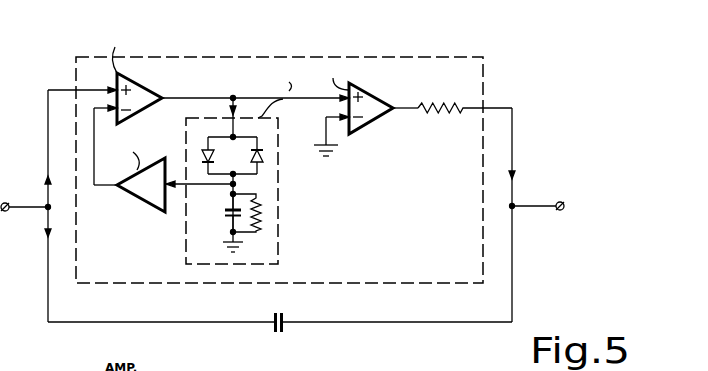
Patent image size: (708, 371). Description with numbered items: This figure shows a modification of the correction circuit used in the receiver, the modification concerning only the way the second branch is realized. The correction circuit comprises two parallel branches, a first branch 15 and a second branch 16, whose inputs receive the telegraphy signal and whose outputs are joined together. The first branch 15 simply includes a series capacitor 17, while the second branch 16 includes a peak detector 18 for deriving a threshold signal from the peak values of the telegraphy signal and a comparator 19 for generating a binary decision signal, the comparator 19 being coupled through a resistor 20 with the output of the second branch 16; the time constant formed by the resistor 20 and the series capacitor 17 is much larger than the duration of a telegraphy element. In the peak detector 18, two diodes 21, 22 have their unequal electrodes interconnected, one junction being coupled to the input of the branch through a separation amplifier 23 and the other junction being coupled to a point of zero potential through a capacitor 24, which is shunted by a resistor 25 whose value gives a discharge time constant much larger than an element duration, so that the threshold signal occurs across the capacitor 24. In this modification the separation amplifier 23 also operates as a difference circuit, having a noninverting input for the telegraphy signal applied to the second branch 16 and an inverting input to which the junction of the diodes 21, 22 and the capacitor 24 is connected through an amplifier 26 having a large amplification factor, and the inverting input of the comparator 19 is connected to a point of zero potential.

The first branch 15 is at (148, 312).
The second branch 16 is at (484, 73).
The series capacitor 17 is at (282, 313).
The peak detector 18 is at (279, 213).
The comparator 19 is at (372, 120).
The resistor 20 is at (440, 113).
The diode 21 is at (205, 150).
The diode 22 is at (262, 155).
The separation amplifier 23 is at (148, 89).
The capacitor 24 is at (225, 212).
The resistor 25 is at (262, 218).
The amplifier 26 is at (138, 200).